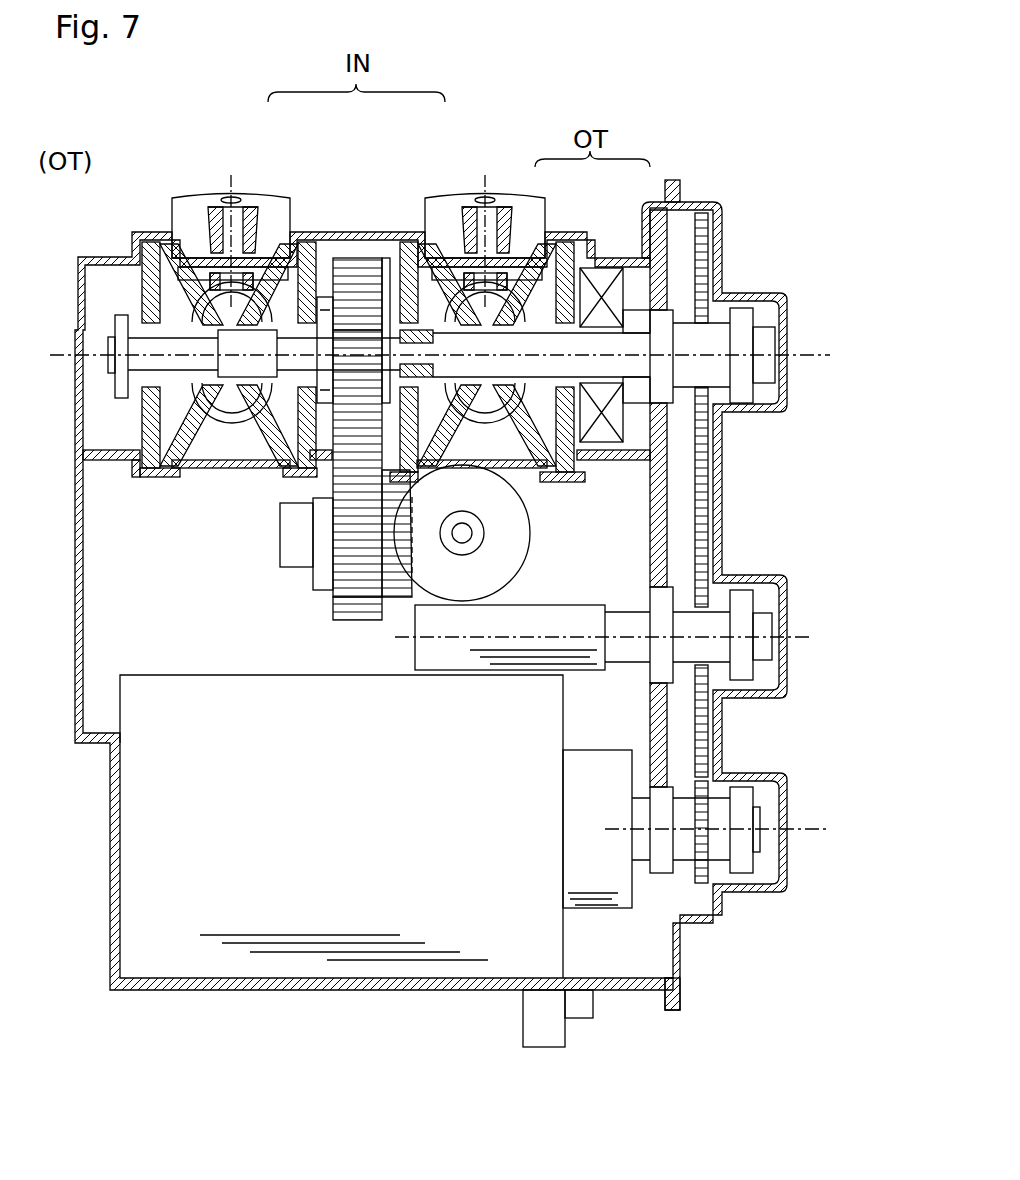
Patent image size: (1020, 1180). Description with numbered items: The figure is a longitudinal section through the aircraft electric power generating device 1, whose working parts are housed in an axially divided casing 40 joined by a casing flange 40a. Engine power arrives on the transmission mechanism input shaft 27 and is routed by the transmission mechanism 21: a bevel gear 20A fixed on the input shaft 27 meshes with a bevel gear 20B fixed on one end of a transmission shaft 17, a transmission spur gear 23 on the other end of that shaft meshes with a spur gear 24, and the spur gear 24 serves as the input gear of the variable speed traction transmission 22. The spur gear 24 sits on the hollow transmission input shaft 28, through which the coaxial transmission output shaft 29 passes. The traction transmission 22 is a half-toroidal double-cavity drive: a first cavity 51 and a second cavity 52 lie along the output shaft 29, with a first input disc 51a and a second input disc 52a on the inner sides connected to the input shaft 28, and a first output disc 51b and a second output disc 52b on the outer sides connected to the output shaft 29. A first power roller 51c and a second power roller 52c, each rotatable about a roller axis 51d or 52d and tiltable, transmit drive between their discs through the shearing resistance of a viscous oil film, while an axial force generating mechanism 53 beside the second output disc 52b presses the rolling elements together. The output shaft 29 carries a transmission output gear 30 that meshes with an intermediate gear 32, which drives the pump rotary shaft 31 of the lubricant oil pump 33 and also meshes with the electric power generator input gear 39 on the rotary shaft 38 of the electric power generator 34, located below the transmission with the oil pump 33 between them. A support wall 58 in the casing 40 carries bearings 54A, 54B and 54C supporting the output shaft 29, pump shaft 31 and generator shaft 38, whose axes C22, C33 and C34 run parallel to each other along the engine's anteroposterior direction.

The electric power generating device 1 is at (715, 199).
The transmission shaft 17 is at (295, 540).
The bevel gear 20A is at (503, 562).
The bevel gear 20B is at (397, 592).
The transmission mechanism 21 is at (295, 580).
The variable speed traction transmission 22 is at (150, 307).
The transmission spur gear 23 is at (355, 607).
The spur gear 24 is at (357, 268).
The transmission mechanism input shaft 27 is at (497, 535).
The transmission input shaft 28 is at (353, 262).
The transmission output shaft 29 is at (593, 343).
The transmission output gear 30 is at (703, 281).
The pump rotary shaft 31 is at (623, 653).
The intermediate gear 32 is at (703, 578).
The lubricant oil pump 33 is at (583, 655).
The electric power generator 34 is at (155, 675).
The rotary shaft 38 is at (640, 850).
The electric power generator input gear 39 is at (703, 812).
The casing 40 is at (73, 716).
The casing flange 40a is at (679, 999).
The first cavity 51 is at (261, 290).
The first input disc 51a is at (312, 262).
The first output disc 51b is at (153, 235).
The first power roller 51c is at (195, 277).
The roller axis 51d is at (228, 190).
The second cavity 52 is at (500, 283).
The second input disc 52a is at (402, 305).
The second output disc 52b is at (563, 247).
The second power roller 52c is at (510, 410).
The roller axis 52d is at (480, 192).
The axial force generating mechanism 53 is at (618, 424).
The bearing 54A is at (663, 340).
The bearing 54B is at (662, 622).
The bearing 54C is at (663, 868).
The support wall 58 is at (660, 543).
The shaft axis of the traction transmission C22 is at (807, 358).
The shaft axis of the lubricant oil pump C33 is at (800, 639).
The shaft axis of the electric power generator C34 is at (810, 831).